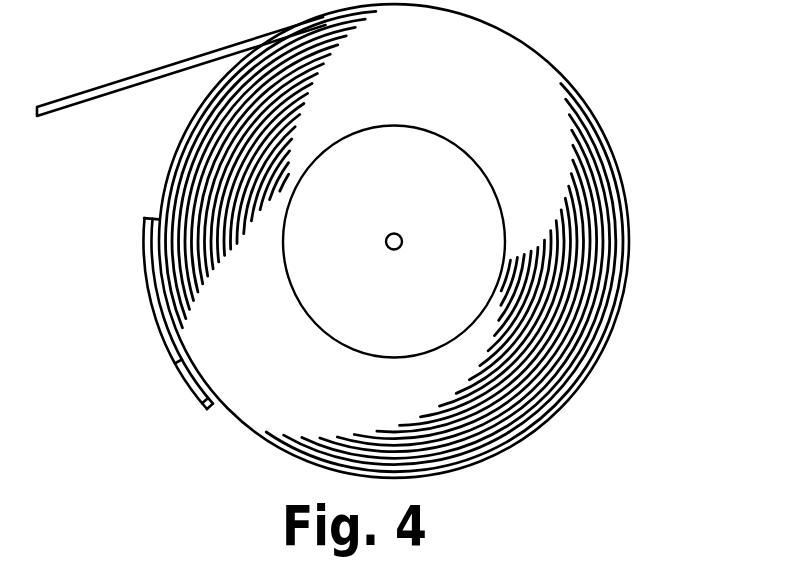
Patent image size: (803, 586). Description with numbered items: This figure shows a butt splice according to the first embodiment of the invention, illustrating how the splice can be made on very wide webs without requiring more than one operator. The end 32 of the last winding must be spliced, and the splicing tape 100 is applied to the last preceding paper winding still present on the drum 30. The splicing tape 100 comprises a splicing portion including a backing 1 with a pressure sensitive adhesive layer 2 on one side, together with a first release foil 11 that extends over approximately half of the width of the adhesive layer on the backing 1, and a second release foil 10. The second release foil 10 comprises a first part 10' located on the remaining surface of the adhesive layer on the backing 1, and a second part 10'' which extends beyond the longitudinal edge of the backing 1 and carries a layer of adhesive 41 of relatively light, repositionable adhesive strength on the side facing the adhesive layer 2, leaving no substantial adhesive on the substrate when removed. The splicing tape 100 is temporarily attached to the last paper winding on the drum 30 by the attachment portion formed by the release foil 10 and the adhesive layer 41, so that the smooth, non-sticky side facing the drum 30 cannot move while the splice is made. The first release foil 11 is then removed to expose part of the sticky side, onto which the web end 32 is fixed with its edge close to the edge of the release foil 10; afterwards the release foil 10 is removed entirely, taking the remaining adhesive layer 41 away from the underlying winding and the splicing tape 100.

The drum 30 is at (523, 108).
The end of the last winding 32 is at (83, 92).
The splicing tape 100 is at (125, 312).
The second release foil 10 is at (141, 312).
The first part of the second release foil 10' is at (132, 345).
The second part of the second release foil 10'' is at (162, 415).
The backing 1 is at (142, 221).
The pressure sensitive adhesive layer 2 is at (159, 216).
The first release foil 11 is at (147, 244).
The adhesive layer 41 is at (207, 400).